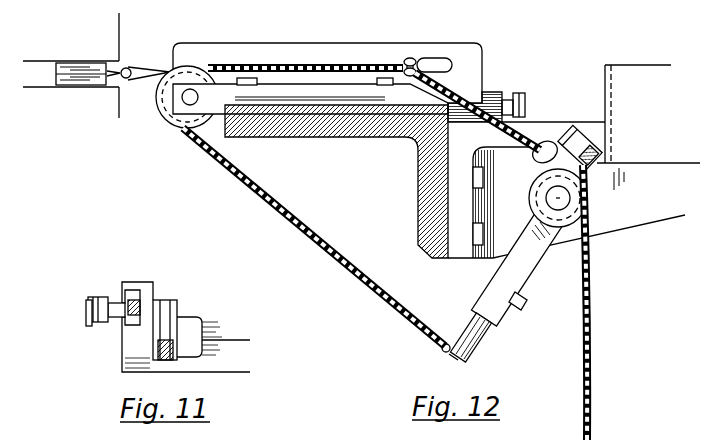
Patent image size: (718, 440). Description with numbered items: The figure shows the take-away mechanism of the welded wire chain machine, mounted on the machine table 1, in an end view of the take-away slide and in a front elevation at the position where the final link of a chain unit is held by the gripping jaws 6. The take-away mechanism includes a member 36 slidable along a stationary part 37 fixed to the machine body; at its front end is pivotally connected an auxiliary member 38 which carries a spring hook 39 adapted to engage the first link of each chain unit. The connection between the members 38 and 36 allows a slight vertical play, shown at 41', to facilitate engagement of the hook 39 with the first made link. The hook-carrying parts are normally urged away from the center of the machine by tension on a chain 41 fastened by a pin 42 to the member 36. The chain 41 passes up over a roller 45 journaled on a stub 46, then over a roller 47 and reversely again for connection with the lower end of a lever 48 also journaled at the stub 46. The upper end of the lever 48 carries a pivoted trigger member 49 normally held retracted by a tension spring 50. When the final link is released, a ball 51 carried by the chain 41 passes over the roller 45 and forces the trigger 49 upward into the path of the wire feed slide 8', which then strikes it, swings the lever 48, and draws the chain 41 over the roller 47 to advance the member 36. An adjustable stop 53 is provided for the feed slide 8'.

In FIG. 12, the table 1 is at (322, 130).
In FIG. 12, the gripping jaws 6 is at (107, 40).
In FIG. 12, the feed slide 8' is at (638, 100).
In FIG. 11, the member 36 is at (123, 317).
In FIG. 12, the stationary part 37 is at (361, 46).
In FIG. 11, the auxiliary member 38 is at (102, 297).
In FIG. 11, the spring hook 39 is at (98, 327).
In FIG. 12, the chain 41 is at (410, 229).
In FIG. 11, the vertical play 41' is at (129, 282).
In FIG. 12, the pin 42 is at (413, 60).
In FIG. 12, the roller 45 is at (584, 200).
In FIG. 12, the stub 46 is at (548, 198).
In FIG. 12, the roller 47 is at (165, 112).
In FIG. 11, the roller 47 is at (163, 322).
In FIG. 12, the lever 48 is at (495, 288).
In FIG. 12, the trigger member 49 is at (578, 132).
In FIG. 12, the tension spring 50 is at (620, 153).
In FIG. 12, the ball 51 is at (544, 143).
In FIG. 12, the adjustable stop 53 is at (490, 95).